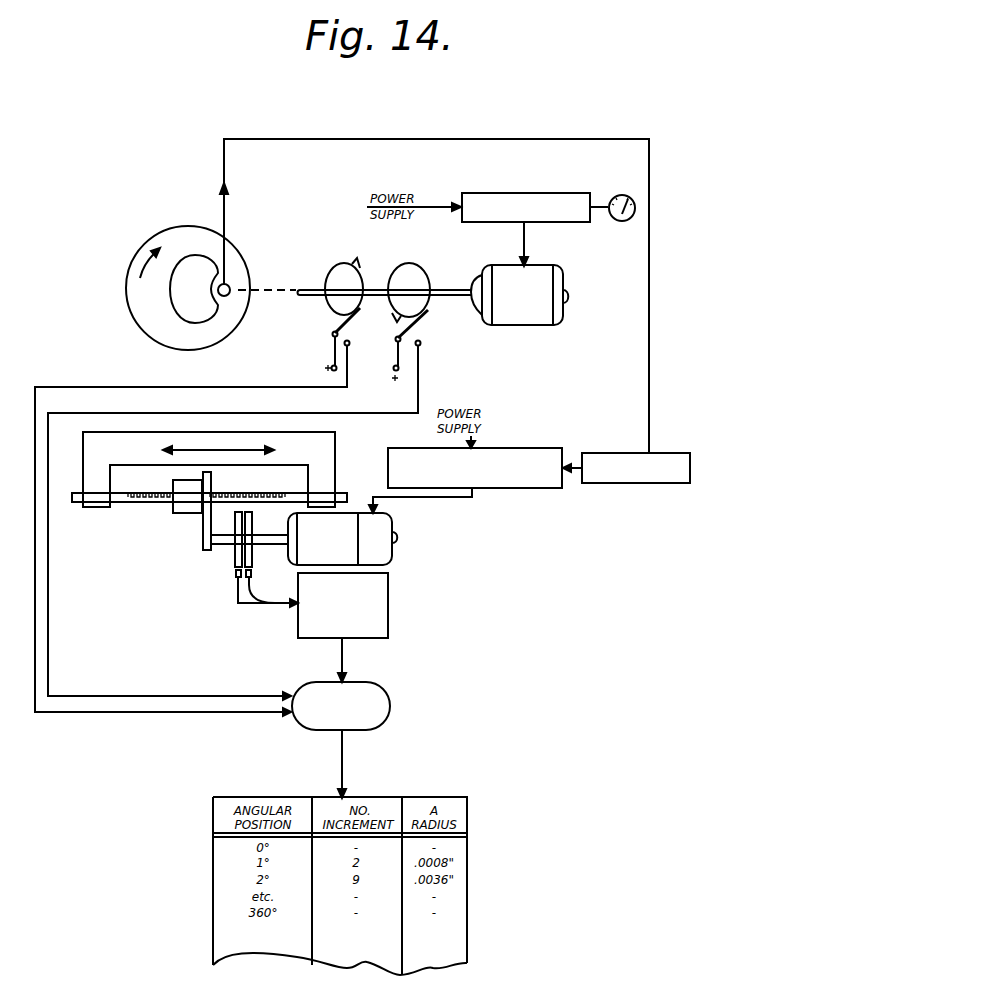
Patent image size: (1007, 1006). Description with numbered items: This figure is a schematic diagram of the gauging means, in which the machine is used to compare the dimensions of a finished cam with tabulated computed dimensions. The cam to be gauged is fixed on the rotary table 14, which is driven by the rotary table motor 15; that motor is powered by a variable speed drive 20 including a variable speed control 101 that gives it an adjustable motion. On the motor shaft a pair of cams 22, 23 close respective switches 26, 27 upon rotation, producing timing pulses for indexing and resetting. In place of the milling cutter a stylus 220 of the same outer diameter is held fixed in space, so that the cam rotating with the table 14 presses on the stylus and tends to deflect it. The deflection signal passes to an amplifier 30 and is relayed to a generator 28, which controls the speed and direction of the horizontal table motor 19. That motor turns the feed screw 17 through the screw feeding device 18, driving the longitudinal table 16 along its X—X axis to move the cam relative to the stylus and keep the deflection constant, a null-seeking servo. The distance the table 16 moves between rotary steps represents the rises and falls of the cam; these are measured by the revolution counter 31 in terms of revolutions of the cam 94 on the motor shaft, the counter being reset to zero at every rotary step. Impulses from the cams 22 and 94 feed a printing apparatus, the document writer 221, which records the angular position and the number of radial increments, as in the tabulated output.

The rotary table 14 is at (157, 237).
The stylus 220 is at (230, 286).
The cam 22 is at (341, 262).
The cam 23 is at (410, 270).
The switch 26 is at (361, 320).
The switch 27 is at (432, 321).
The rotary table motor 15 is at (528, 318).
The variable speed drive 20 is at (511, 185).
The variable speed control 101 is at (625, 222).
The longitudinal table 16 is at (335, 440).
The feed screw 17 is at (122, 503).
The screw feeding device 18 is at (179, 509).
The horizontal table motor 19 is at (375, 555).
The cam 94 is at (233, 560).
The generator 28 is at (513, 480).
The amplifier 30 is at (625, 478).
The counter 31 is at (380, 610).
The document writer 221 is at (380, 708).